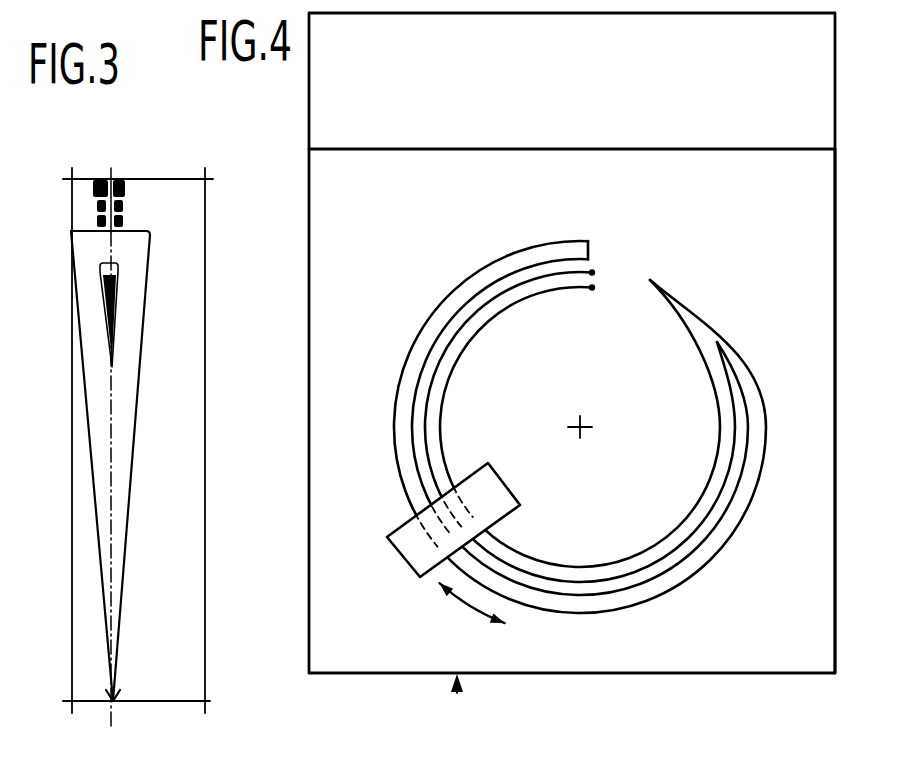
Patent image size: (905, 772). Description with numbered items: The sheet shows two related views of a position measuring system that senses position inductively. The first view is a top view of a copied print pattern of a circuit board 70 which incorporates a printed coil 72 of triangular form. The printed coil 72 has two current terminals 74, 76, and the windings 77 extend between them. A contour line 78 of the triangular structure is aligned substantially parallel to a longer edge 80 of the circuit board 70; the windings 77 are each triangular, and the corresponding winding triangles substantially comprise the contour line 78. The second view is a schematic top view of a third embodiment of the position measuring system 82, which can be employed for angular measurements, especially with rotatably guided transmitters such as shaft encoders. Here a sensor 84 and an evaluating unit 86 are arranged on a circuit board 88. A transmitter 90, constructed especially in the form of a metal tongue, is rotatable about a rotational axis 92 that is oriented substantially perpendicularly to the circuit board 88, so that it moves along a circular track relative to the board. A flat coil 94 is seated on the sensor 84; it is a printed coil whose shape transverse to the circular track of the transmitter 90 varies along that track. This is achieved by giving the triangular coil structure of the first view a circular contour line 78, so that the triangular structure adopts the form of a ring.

In FIG. 3, the circuit board 70 is at (195, 505).
In FIG. 3, the printed coil 72 is at (137, 310).
In FIG. 3, the current terminal 74 is at (105, 178).
In FIG. 3, the current terminal 76 is at (118, 178).
In FIG. 3, the windings 77 is at (82, 296).
In FIG. 3, the contour line 78 is at (113, 722).
In FIG. 3, the longer edge 80 is at (71, 497).
In FIG. 4, the position measuring system 82 is at (457, 693).
In FIG. 4, the sensor 84 is at (810, 613).
In FIG. 4, the evaluating unit 86 is at (822, 100).
In FIG. 4, the circuit board 88 is at (827, 325).
In FIG. 4, the transmitter 90 is at (413, 547).
In FIG. 4, the rotational axis 92 is at (583, 424).
In FIG. 4, the flat coil 94 is at (685, 302).